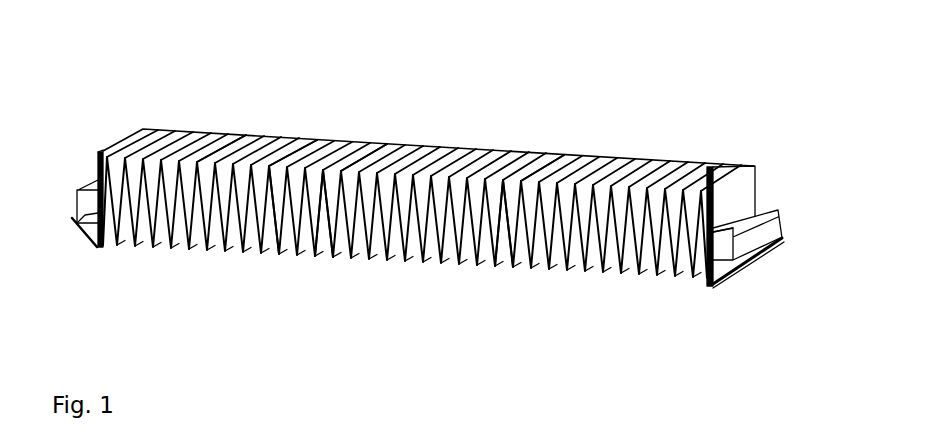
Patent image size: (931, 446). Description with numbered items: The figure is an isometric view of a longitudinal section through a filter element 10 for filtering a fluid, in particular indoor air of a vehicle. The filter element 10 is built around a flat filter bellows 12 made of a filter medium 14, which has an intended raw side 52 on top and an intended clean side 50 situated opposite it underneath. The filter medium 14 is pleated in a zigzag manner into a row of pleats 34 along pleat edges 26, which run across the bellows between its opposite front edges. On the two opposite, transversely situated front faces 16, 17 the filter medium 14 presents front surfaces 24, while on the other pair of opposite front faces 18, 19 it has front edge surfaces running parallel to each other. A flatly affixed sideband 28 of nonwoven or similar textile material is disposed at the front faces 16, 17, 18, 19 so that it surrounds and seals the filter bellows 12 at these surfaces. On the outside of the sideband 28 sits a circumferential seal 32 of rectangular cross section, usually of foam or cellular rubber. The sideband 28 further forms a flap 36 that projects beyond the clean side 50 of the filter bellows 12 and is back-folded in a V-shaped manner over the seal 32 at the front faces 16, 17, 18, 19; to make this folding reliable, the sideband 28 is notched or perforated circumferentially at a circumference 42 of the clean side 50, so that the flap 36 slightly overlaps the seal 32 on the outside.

The filter element 10 is at (678, 86).
The filter bellows 12 is at (440, 147).
The filter medium 14 is at (326, 259).
The front face 16 is at (125, 142).
The front face 17 is at (747, 197).
The front face 18 is at (273, 271).
The front face 19 is at (363, 143).
The front surface 24 is at (98, 180).
The pleat edge 26 is at (223, 133).
The sideband 28 is at (718, 198).
The seal 32 is at (72, 219).
The pleat 34 is at (300, 138).
The flap 36 is at (91, 251).
The circumference 42 is at (721, 290).
The clean side 50 is at (504, 281).
The raw side 52 is at (537, 153).